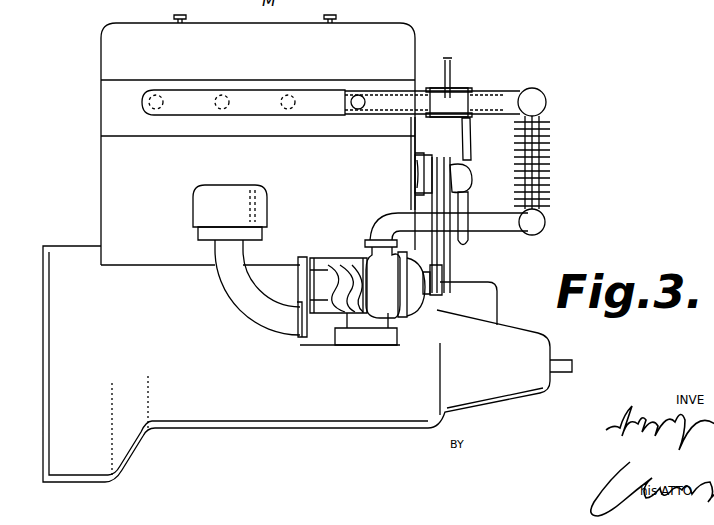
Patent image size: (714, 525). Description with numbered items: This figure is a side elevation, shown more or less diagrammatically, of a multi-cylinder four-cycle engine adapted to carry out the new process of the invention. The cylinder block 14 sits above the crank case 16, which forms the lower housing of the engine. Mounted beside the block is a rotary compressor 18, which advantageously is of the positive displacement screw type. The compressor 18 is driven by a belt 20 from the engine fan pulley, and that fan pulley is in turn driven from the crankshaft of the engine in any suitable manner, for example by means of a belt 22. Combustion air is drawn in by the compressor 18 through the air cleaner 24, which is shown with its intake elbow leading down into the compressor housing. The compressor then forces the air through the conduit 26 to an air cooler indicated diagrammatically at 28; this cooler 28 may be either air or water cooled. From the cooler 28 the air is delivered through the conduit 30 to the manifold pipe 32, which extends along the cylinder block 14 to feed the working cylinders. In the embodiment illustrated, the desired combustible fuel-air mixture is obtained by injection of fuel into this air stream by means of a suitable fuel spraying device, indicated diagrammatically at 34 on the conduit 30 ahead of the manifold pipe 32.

The cylinder block 14 is at (103, 180).
The crank case 16 is at (300, 420).
The rotary compressor 18 is at (344, 263).
The belt 20 is at (432, 202).
The belt 22 is at (447, 264).
The air cleaner 24 is at (252, 193).
The conduit 26 is at (381, 228).
The air cooler 28 is at (540, 164).
The conduit 30 is at (504, 96).
The manifold pipe 32 is at (248, 98).
The fuel spraying device 34 is at (460, 95).